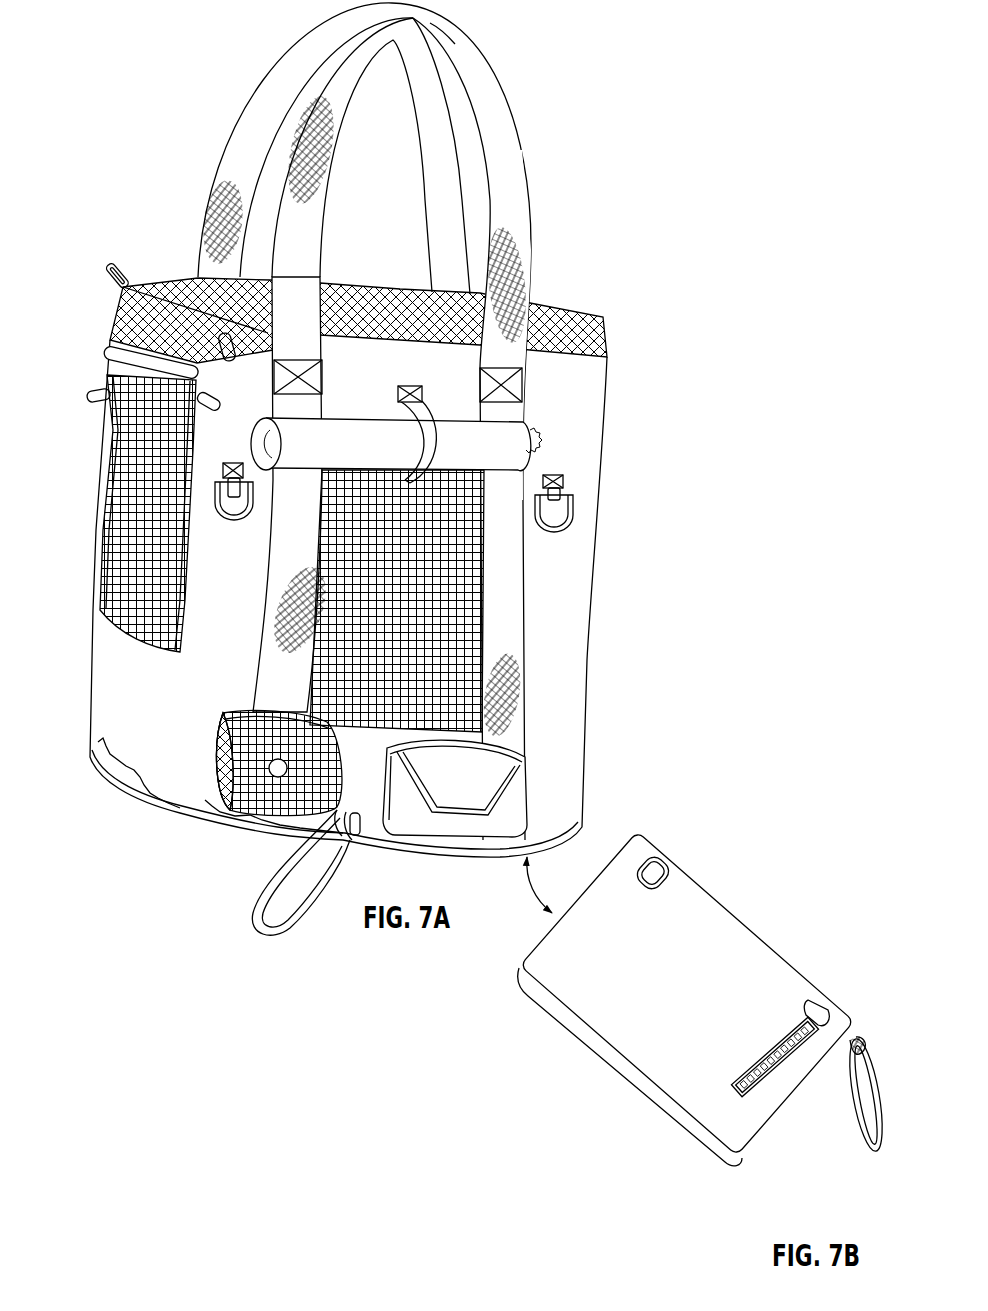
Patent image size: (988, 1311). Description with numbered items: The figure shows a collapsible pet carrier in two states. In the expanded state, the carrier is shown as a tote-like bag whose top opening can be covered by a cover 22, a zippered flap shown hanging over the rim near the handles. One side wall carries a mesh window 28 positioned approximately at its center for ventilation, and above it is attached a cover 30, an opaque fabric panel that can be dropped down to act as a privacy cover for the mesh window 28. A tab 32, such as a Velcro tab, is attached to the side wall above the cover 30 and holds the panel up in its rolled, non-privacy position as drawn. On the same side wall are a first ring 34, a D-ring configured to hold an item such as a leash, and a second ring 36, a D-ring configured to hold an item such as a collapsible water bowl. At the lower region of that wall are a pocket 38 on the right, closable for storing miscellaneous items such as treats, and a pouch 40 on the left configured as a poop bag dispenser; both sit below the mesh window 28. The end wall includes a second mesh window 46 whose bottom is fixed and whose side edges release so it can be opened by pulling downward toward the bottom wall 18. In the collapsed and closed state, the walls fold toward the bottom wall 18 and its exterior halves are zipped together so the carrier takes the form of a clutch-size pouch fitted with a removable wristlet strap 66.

In FIG. 7A, the cover 22 is at (170, 270).
In FIG. 7A, the mesh window 28 is at (490, 647).
In FIG. 7A, the cover 30 is at (533, 427).
In FIG. 7A, the tab 32 is at (437, 392).
In FIG. 7A, the first ring 34 is at (211, 516).
In FIG. 7A, the second ring 36 is at (579, 523).
In FIG. 7A, the pocket 38 is at (538, 793).
In FIG. 7A, the pouch 40 is at (208, 795).
In FIG. 7A, the second mesh window 46 is at (90, 543).
In FIG. 7B, the bottom wall 18 is at (724, 1097).
In FIG. 7B, the wristlet strap 66 is at (870, 1164).